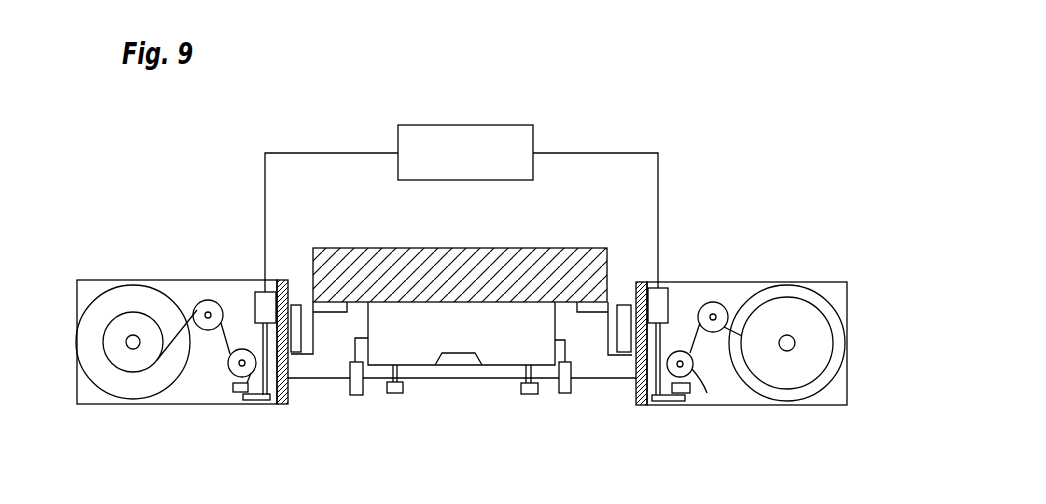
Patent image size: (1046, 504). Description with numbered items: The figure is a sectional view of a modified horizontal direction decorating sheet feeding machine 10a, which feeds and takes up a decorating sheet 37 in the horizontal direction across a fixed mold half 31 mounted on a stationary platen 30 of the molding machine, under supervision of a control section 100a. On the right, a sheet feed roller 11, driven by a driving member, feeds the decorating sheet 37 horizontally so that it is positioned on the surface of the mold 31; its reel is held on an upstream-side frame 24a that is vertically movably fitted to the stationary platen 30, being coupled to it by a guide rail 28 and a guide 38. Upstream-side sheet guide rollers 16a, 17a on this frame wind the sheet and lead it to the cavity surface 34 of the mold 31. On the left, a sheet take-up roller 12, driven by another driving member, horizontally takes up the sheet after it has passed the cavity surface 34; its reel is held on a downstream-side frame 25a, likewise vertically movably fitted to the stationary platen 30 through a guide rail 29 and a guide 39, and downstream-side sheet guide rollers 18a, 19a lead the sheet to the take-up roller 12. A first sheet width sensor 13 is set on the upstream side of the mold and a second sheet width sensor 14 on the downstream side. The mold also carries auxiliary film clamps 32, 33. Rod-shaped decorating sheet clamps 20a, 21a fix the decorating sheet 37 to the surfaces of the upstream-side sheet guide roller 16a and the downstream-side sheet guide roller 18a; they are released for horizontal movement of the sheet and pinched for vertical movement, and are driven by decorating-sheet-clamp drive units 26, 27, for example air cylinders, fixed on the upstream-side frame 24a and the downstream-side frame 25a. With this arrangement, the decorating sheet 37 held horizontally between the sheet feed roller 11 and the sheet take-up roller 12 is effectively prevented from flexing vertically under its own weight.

The horizontal direction decorating sheet feeding machine 10a is at (698, 200).
The control section 100a is at (523, 132).
The sheet feed roller 11 is at (800, 300).
The sheet take-up roller 12 is at (107, 302).
The first sheet width sensor 13 is at (565, 395).
The second sheet width sensor 14 is at (355, 396).
The upstream-side sheet guide roller 16a is at (707, 395).
The upstream-side sheet guide roller 17a is at (715, 302).
The downstream-side sheet guide roller 18a is at (241, 349).
The downstream-side sheet guide roller 19a is at (206, 301).
The decorating sheet clamp 20a is at (681, 403).
The decorating sheet clamp 21a is at (242, 404).
The upstream-side frame 24a is at (822, 406).
The downstream-side frame 25a is at (98, 405).
The decorating-sheet-clamp drive unit 26 is at (666, 290).
The decorating-sheet-clamp drive unit 27 is at (260, 290).
The guide rail 28 is at (618, 305).
The guide rail 29 is at (305, 296).
The stationary platen 30 is at (417, 247).
The fixed mold half 31 is at (533, 313).
The film clamp 32 is at (523, 396).
The film clamp 33 is at (395, 395).
The cavity surface 34 is at (457, 364).
The decorating sheet 37 is at (607, 387).
The guide 38 is at (628, 300).
The guide 39 is at (286, 302).